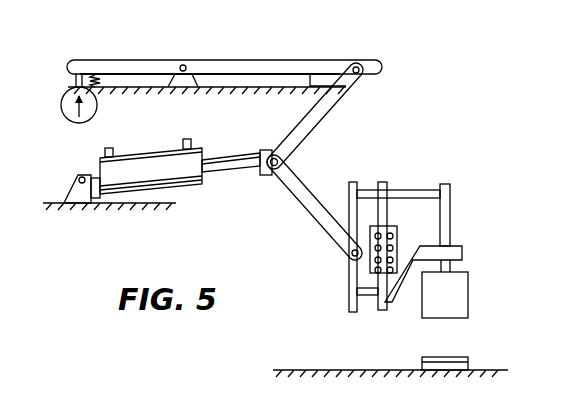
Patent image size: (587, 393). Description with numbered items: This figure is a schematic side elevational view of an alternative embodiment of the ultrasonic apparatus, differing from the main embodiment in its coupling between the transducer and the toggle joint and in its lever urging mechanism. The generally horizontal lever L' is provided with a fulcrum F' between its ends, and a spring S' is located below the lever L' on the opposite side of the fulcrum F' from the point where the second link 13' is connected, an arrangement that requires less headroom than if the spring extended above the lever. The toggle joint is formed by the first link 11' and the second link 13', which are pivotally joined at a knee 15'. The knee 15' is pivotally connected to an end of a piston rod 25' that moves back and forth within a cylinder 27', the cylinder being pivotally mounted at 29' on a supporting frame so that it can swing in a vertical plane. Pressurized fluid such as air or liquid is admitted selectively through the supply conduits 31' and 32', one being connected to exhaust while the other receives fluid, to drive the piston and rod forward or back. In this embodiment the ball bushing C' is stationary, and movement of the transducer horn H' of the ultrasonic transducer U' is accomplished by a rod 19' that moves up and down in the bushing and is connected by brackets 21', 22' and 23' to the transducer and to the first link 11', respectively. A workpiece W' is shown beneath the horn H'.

The lever L' is at (224, 58).
The fulcrum F' is at (185, 50).
The spring S' is at (94, 77).
The second link 13' is at (325, 116).
The first link 11' is at (311, 207).
The knee 15' is at (302, 159).
The piston rod 25' is at (237, 149).
The cylinder 27' is at (150, 188).
The supply conduit 31' is at (124, 141).
The supply conduit 32' is at (201, 132).
The pivotal mounting 29' is at (67, 170).
The bracket 23' is at (375, 247).
The rod 19' is at (398, 227).
The bracket 21' is at (456, 208).
The ball bushing C' is at (396, 240).
The ultrasonic transducer U' is at (468, 222).
The bracket 22' is at (422, 294).
The transducer horn H' is at (462, 291).
The workpiece plate W' is at (470, 355).